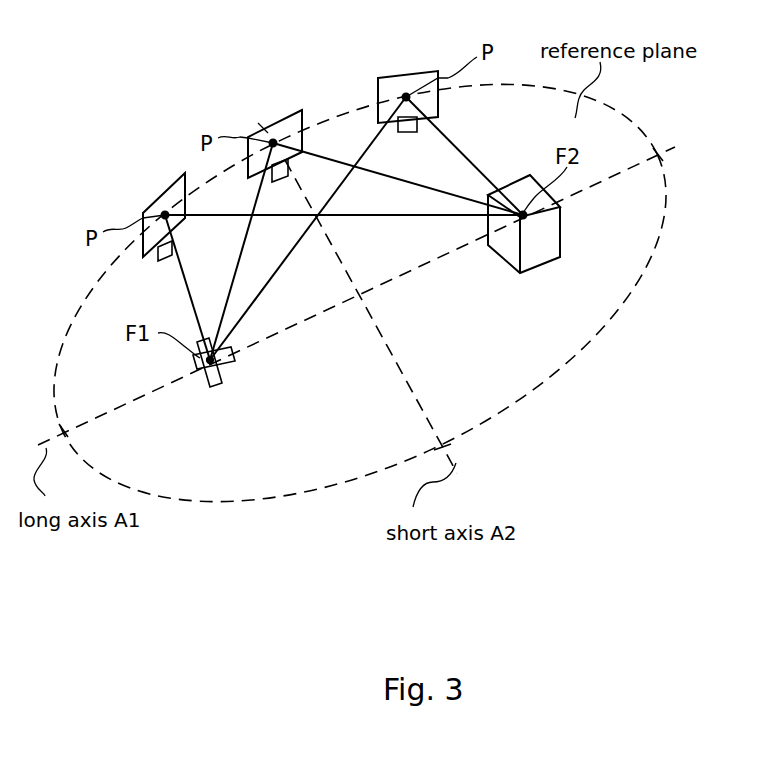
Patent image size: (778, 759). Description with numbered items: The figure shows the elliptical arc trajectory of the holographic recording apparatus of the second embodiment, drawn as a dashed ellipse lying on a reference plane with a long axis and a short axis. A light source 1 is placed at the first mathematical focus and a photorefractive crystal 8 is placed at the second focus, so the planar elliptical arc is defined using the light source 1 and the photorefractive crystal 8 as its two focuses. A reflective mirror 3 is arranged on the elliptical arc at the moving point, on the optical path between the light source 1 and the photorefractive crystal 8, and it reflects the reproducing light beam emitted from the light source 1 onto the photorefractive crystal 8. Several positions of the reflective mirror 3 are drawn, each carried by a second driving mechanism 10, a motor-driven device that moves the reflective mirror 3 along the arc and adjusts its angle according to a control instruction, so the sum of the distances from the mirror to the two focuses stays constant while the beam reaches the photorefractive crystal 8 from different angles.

The reflective mirror 3 is at (162, 197).
The second driving mechanism 10 is at (163, 247).
The photorefractive crystal 8 is at (540, 273).
The light source 1 is at (215, 393).